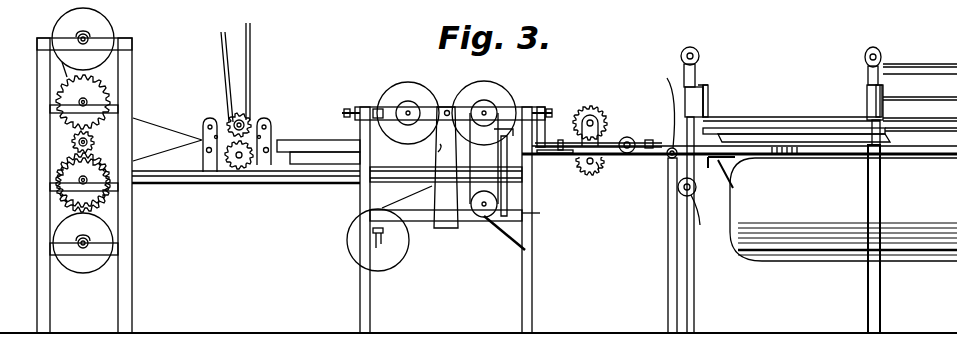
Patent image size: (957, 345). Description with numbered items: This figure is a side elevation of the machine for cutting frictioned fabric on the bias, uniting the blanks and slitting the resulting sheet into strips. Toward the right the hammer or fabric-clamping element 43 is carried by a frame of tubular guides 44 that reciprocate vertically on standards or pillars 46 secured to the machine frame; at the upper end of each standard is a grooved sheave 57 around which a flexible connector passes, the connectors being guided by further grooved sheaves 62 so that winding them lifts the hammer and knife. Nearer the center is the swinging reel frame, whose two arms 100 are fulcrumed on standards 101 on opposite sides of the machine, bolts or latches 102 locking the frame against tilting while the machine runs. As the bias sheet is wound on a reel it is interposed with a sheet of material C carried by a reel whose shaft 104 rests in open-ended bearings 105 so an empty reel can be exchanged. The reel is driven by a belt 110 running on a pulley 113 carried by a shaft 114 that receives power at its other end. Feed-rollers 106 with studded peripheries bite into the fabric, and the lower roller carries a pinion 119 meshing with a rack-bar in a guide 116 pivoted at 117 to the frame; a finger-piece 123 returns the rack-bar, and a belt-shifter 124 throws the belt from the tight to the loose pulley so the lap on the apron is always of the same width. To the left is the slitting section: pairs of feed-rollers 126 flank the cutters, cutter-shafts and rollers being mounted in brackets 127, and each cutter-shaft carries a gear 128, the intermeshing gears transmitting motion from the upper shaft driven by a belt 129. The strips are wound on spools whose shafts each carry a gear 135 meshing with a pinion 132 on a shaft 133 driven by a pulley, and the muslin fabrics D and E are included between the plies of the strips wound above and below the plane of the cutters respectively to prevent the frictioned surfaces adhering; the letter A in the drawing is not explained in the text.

The fabric D is at (66, 72).
The gear 135 is at (97, 88).
The pinion 132 is at (77, 143).
The shaft 133 is at (90, 134).
The fabric E is at (97, 207).
The belt A is at (167, 132).
The belt 129 is at (252, 73).
The feed-rollers 126 is at (206, 120).
The gear 128 is at (246, 118).
The brackets 127 is at (279, 142).
The sheet of material C is at (450, 220).
The bolts or latches 102 is at (352, 110).
The arms 100 is at (427, 105).
The belt 110 is at (493, 100).
The pulley 113 is at (487, 213).
The standards 101 is at (438, 152).
The open-ended bearings 105 is at (387, 243).
The shaft 104 is at (378, 248).
The feed-rollers 106 is at (607, 120).
The guide 116 is at (560, 157).
The belt-shifter 124 is at (522, 193).
The shaft 114 is at (522, 213).
The finger-piece 123 is at (622, 152).
The pinion 119 is at (598, 168).
The pivot 117 is at (655, 111).
The grooved sheave 57 is at (697, 51).
The standards or pillars 46 is at (698, 80).
The grooved sheaves 62 is at (693, 199).
The hammer or fabric-clamping element 43 is at (762, 116).
The tubular guides 44 is at (702, 110).